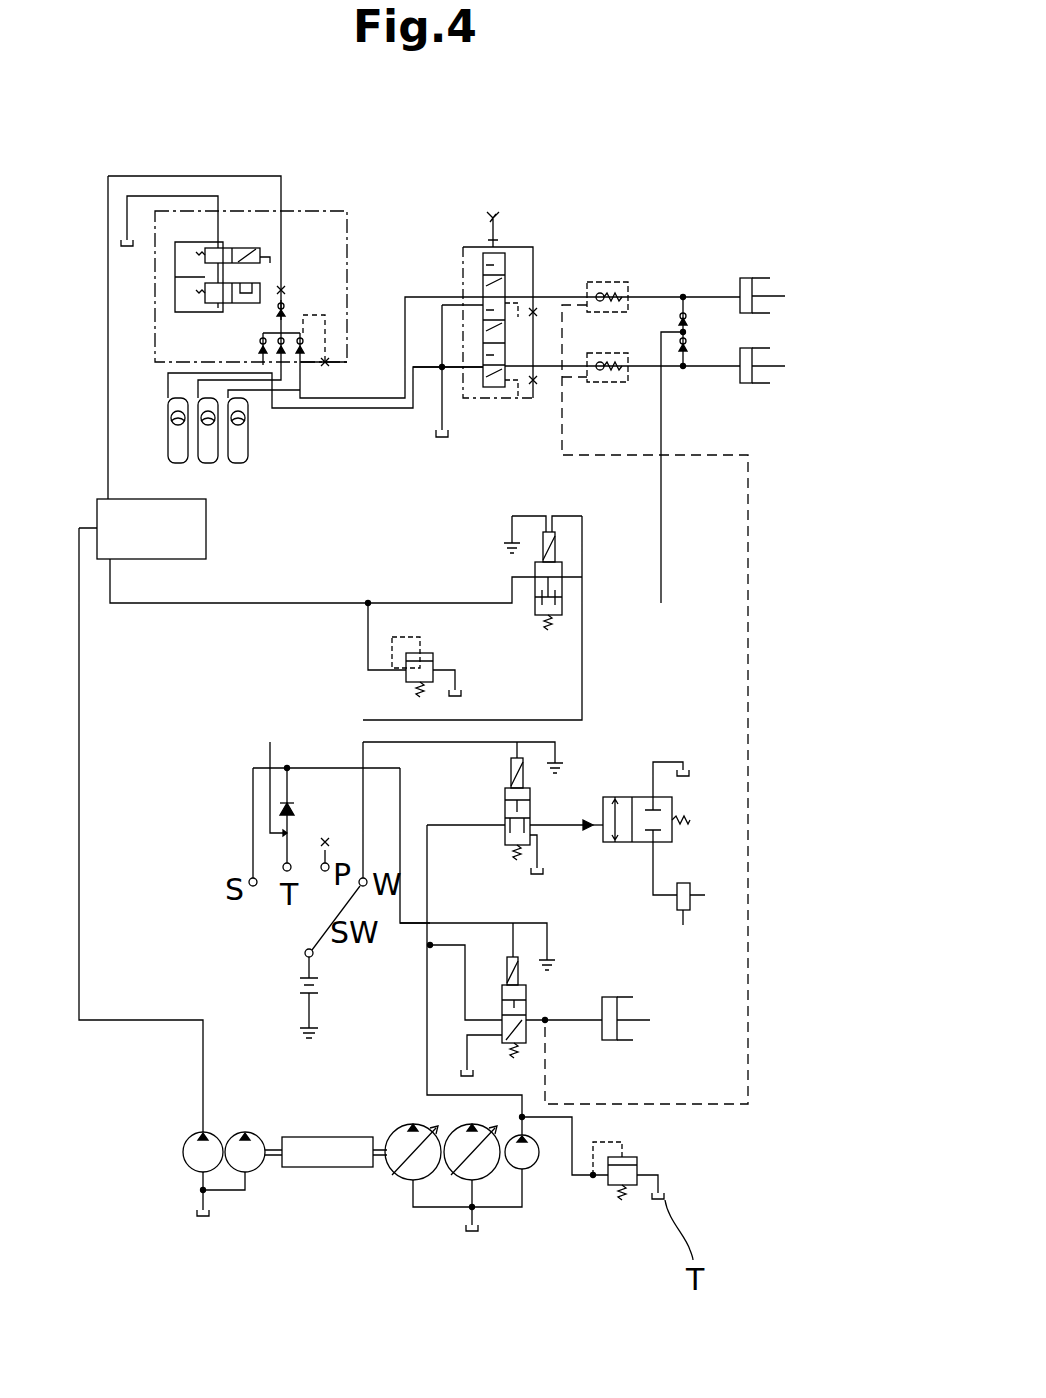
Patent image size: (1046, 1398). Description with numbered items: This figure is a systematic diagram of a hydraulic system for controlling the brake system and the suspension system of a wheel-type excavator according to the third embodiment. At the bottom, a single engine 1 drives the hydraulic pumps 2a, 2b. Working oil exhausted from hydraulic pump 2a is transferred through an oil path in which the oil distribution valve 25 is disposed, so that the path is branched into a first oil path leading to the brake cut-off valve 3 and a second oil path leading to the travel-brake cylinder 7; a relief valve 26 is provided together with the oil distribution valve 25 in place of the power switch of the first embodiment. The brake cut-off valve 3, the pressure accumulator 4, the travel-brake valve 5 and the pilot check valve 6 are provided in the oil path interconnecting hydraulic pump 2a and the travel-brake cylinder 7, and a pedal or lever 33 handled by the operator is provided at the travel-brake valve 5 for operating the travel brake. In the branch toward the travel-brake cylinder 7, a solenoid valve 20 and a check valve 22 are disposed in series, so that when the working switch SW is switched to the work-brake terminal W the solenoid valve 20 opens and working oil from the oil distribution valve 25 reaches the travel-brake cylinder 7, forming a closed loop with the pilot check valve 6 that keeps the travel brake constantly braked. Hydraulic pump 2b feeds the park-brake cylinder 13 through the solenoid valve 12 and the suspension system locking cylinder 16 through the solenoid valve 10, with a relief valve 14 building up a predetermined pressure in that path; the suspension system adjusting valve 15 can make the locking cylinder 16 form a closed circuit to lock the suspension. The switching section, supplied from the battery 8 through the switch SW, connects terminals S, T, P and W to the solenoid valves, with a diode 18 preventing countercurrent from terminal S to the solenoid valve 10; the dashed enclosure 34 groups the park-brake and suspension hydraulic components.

The engine 1 is at (355, 1167).
The hydraulic pump 2a is at (255, 1172).
The hydraulic pump 2b is at (535, 1172).
The brake cut-off valve 3 is at (222, 211).
The pressure accumulator 4 is at (180, 427).
The travel-brake valve 5 is at (533, 265).
The pilot check valve 6 is at (628, 282).
The travel-brake cylinder 7 is at (762, 278).
The battery 8 is at (310, 980).
The solenoid valve 10 is at (500, 832).
The solenoid valve 12 is at (502, 997).
The park-brake cylinder 13 is at (620, 997).
The relief valve 14 is at (637, 1170).
The suspension system adjusting valve 15 is at (640, 795).
The suspension system locking cylinder 16 is at (690, 915).
The diode 18 is at (285, 812).
The solenoid valve 20 is at (562, 605).
The check valve 22 is at (686, 332).
The oil distribution valve 25 is at (206, 528).
The relief valve 26 is at (433, 665).
The pedal or lever 33 is at (495, 216).
The hydraulic unit 34 is at (750, 840).